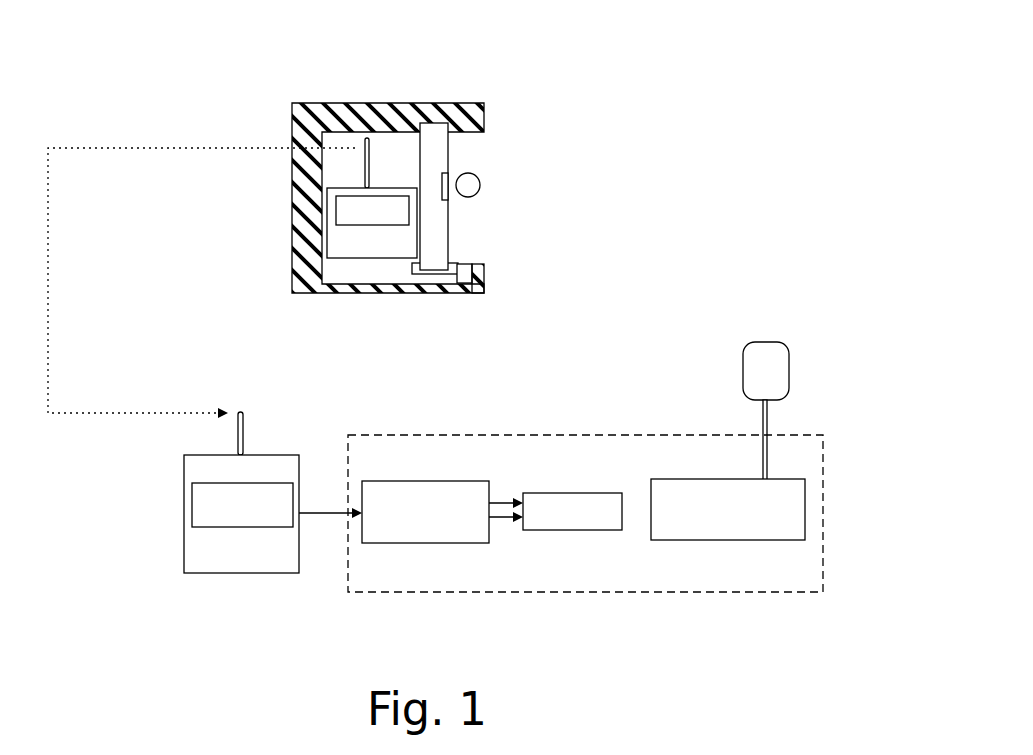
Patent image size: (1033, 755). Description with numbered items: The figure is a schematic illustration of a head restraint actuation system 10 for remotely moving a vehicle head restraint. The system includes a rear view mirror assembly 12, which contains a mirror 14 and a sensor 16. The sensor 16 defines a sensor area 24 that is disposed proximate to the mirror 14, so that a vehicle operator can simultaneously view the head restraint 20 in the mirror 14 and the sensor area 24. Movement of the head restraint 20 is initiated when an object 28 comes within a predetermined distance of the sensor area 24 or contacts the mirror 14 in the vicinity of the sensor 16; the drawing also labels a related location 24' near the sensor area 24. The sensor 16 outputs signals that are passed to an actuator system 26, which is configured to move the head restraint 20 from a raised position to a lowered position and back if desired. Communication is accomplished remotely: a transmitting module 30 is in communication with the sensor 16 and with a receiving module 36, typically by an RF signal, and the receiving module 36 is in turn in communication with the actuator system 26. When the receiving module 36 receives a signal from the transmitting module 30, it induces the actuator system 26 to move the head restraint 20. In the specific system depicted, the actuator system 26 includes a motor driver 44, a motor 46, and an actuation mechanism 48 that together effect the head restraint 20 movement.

The head restraint actuation system 10 is at (712, 57).
The rear view mirror assembly 12 is at (437, 94).
The mirror 14 is at (440, 152).
The sensor 16 is at (447, 183).
The head restraint 20 is at (775, 342).
The sensor area 24 is at (530, 207).
The stop 24' is at (560, 277).
The actuator system 26 is at (492, 435).
The object 28 is at (480, 181).
The transmitting module 30 is at (355, 190).
The receiving module 36 is at (246, 573).
The motor driver 44 is at (423, 543).
The motor 46 is at (580, 530).
The actuation mechanism 48 is at (728, 540).